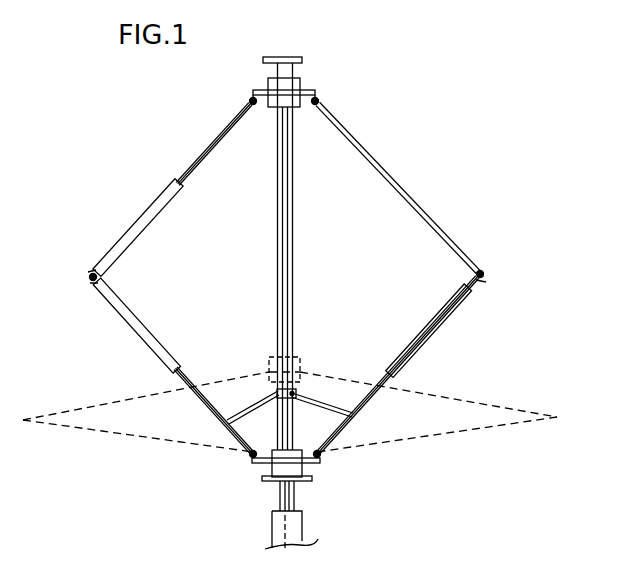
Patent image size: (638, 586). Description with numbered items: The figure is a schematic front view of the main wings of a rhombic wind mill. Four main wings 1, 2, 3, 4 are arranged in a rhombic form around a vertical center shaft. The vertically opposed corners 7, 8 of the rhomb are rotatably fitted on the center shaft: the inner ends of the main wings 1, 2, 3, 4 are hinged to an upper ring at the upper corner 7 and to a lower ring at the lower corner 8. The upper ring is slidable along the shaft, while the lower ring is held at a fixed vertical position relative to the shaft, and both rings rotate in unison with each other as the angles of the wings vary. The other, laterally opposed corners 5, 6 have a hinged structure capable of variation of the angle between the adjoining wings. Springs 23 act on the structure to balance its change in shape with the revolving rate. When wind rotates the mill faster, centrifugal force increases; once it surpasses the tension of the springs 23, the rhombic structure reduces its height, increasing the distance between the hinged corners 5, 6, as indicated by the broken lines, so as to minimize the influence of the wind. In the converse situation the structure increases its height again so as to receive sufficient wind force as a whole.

The main wing 1 is at (187, 162).
The main wing 2 is at (396, 172).
The main wing 3 is at (423, 350).
The main wing 4 is at (195, 400).
The hinged corner 5 is at (88, 278).
The hinged corner 6 is at (487, 274).
The upper corner 7 is at (318, 96).
The lower corner 8 is at (312, 471).
The springs 23 is at (330, 402).